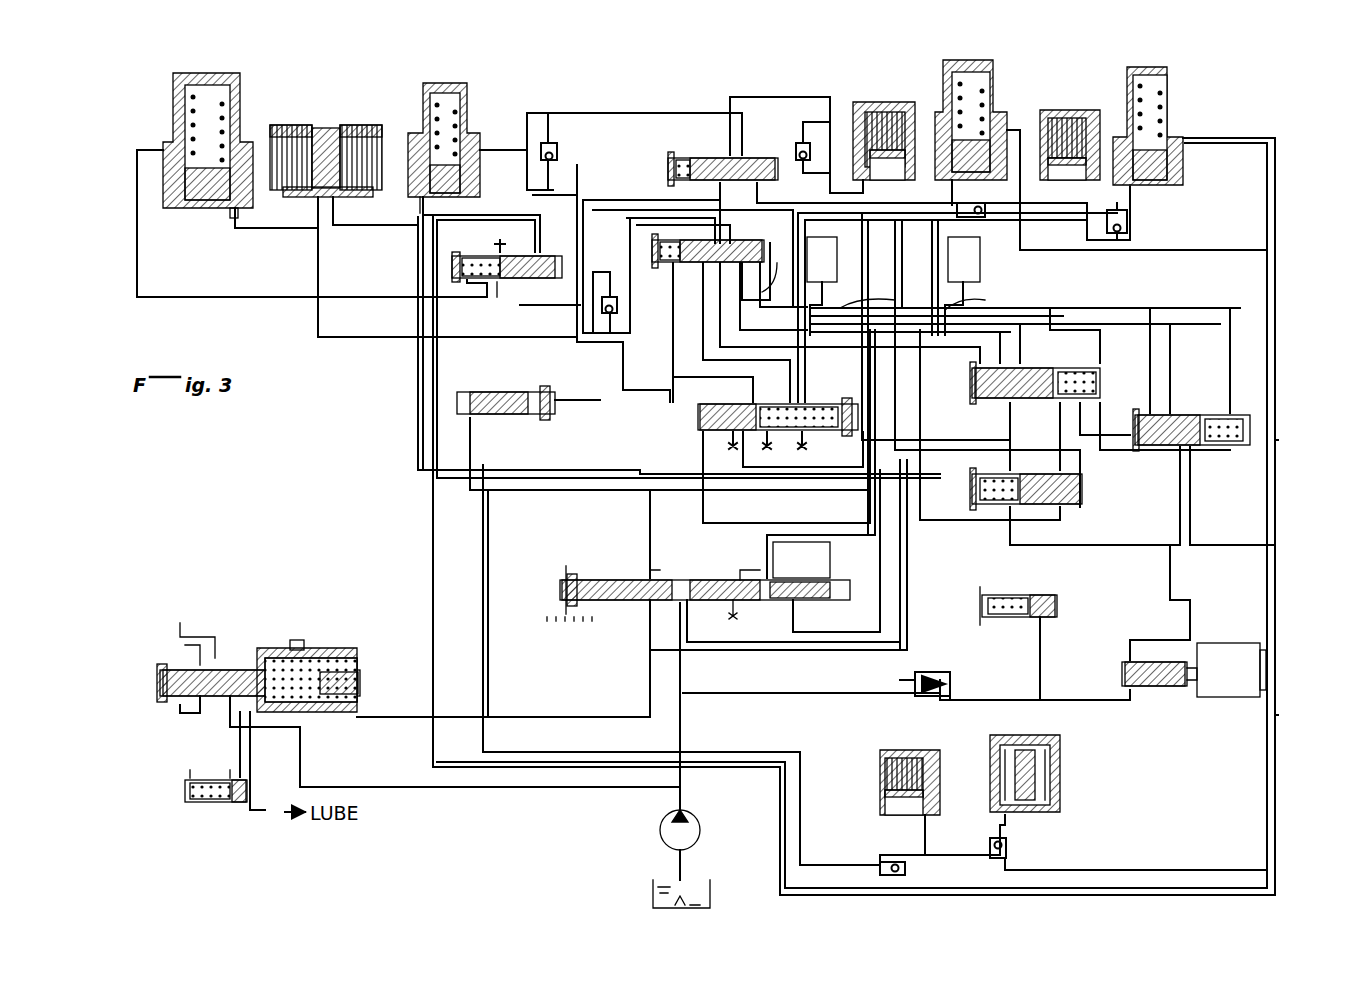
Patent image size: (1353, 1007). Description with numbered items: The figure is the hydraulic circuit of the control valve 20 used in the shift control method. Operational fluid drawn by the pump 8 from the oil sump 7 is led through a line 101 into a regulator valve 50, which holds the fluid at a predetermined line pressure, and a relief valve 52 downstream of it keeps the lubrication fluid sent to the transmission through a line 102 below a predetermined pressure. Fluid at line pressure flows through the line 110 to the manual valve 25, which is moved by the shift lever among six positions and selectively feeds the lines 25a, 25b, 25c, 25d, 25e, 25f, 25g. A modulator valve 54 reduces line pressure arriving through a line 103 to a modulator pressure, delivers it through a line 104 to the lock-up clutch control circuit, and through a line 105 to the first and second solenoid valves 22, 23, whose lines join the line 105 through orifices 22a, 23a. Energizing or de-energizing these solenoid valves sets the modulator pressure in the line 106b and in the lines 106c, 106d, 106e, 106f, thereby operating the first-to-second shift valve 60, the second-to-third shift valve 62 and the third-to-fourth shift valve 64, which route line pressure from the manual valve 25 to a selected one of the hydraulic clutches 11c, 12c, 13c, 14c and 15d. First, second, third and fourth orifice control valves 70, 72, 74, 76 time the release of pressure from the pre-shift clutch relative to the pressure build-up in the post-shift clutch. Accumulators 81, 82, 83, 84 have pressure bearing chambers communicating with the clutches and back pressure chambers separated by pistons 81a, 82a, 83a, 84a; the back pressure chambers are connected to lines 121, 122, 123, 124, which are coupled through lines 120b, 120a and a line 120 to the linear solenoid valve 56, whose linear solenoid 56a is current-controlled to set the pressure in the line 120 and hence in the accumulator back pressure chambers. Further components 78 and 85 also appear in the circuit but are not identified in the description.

The oil sump 7 is at (712, 895).
The pump 8 is at (700, 828).
The first clutch 11c is at (1062, 104).
The second clutch 12c is at (290, 122).
The third clutch 13c is at (882, 96).
The fourth clutch 14c is at (354, 120).
The hydraulic clutch 15d is at (928, 742).
The hydraulic control valve 20 is at (290, 454).
The first solenoid valve 22 is at (822, 236).
The orifice 22a is at (888, 293).
The second solenoid valve 23 is at (978, 245).
The orifice 23a is at (985, 296).
The manual valve 25 is at (622, 572).
The line 25a is at (650, 572).
The line 25b is at (768, 575).
The line 25c is at (830, 575).
The line 25d is at (648, 612).
The line 25e is at (689, 615).
The line 25f is at (735, 614).
The line 25g is at (795, 612).
The regulator valve 50 is at (275, 628).
The relief valve 52 is at (210, 810).
The modulator valve 54 is at (1060, 595).
The linear solenoid valve 56 is at (1185, 635).
The linear solenoid 56a is at (1225, 650).
The 1-2 shift valve 60 is at (810, 435).
The 2-3 shift valve 62 is at (663, 275).
The 3-4 shift valve 64 is at (705, 148).
The first orifice control valve 70 is at (1198, 452).
The second orifice control valve 72 is at (1090, 496).
The third orifice control valve 74 is at (1104, 378).
The fourth orifice control valve 76 is at (500, 292).
The valve 78 is at (545, 420).
The accumulator 81 is at (1186, 98).
The piston 81a is at (1148, 197).
The accumulator 82 is at (246, 90).
The piston 82a is at (218, 212).
The accumulator 83 is at (1003, 78).
The piston 83a is at (965, 182).
The accumulator 84 is at (470, 88).
The piston 84a is at (423, 200).
The pressure control valve 85 is at (1065, 750).
The line 101 is at (472, 790).
The line 102 is at (260, 818).
The line 103 is at (978, 685).
The line 104 is at (806, 640).
The line 105 is at (910, 550).
The line 106b is at (776, 256).
The line 106c is at (755, 523).
The line 106d is at (860, 350).
The line 106e is at (866, 214).
The line 106f is at (673, 357).
The line 110 is at (684, 672).
The line 120 is at (1220, 545).
The line 120a is at (1277, 440).
The line 120b is at (1277, 715).
The line 121 is at (1232, 145).
The line 122 is at (254, 297).
The line 123 is at (1185, 250).
The line 124 is at (442, 258).